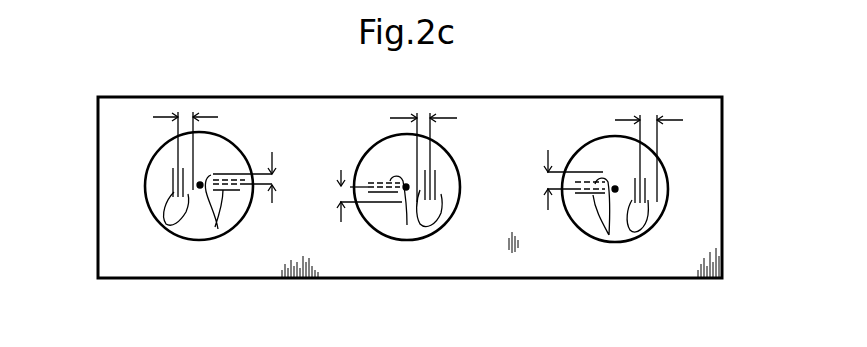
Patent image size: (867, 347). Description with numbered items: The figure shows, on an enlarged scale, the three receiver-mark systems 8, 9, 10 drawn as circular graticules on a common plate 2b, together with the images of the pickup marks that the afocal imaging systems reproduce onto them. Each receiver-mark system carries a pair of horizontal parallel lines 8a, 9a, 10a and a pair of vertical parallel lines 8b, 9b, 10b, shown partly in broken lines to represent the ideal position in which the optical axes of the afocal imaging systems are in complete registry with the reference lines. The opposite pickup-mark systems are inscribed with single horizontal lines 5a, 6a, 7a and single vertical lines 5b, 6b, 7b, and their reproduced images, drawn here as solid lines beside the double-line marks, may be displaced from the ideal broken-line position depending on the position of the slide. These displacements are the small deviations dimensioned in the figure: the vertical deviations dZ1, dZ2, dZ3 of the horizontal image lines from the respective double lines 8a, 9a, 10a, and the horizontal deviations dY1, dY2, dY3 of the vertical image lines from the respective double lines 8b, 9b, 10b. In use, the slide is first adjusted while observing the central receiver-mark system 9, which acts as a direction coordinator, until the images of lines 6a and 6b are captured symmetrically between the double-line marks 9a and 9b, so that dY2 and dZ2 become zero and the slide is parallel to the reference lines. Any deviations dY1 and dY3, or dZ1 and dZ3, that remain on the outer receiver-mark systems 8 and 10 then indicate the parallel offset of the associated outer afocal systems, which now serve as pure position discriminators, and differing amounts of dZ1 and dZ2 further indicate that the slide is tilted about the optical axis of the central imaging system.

The plate / pattern carrier 2b is at (112, 264).
The receiver-mark system 8 is at (153, 193).
The pair of horizontal parallel lines 8a is at (218, 229).
The pair of vertical parallel lines 8b is at (166, 224).
The single horizontal line 5a is at (232, 177).
The single vertical line 5b is at (203, 183).
The receiver-mark system 9 is at (446, 172).
The pair of horizontal parallel lines 9a is at (407, 225).
The pair of vertical parallel lines 9b is at (428, 228).
The single horizontal line 6a is at (378, 195).
The single vertical line 6b is at (408, 182).
The receiver-mark system 10 is at (655, 215).
The pair of horizontal parallel lines 10a is at (609, 235).
The pair of vertical parallel lines 10b is at (637, 231).
The single horizontal line 7a is at (591, 172).
The single vertical line 7b is at (655, 185).
The horizontal deviation dY1 is at (183, 120).
The horizontal deviation dY2 is at (426, 121).
The horizontal deviation dY3 is at (647, 121).
The vertical deviation dZ1 is at (275, 178).
The vertical deviation dZ2 is at (348, 194).
The vertical deviation dZ3 is at (553, 181).